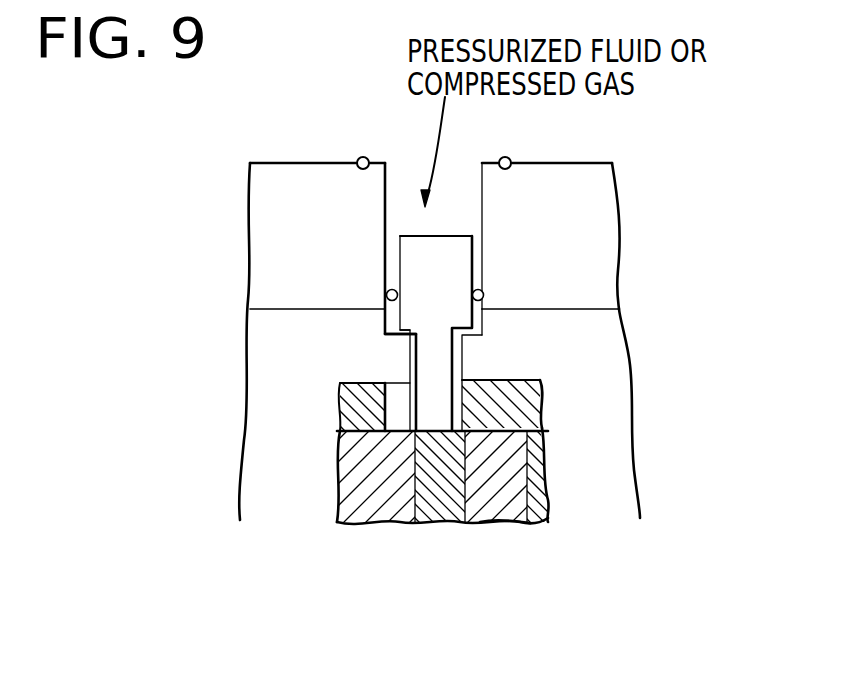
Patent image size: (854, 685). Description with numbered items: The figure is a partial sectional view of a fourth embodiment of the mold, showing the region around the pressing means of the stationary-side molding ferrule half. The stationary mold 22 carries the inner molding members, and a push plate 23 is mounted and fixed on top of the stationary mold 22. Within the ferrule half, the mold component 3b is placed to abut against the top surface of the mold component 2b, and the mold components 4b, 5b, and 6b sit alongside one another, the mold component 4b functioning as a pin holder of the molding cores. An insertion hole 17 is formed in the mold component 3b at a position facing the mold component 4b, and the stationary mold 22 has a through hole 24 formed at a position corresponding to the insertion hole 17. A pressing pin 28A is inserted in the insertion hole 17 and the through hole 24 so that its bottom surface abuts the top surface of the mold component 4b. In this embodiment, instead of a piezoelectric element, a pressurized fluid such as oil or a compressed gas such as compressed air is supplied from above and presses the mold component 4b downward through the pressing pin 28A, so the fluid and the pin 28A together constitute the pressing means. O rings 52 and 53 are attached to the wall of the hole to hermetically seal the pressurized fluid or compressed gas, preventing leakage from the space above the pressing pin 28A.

The O ring 53 is at (362, 157).
The O ring 52 is at (387, 294).
The pressing pin 28A is at (460, 254).
The push plate 23 is at (608, 238).
The stationary mold 22 is at (612, 333).
The through hole 24 is at (384, 329).
The insertion hole 17 is at (403, 403).
The mold component 3b is at (350, 412).
The mold component 2b is at (343, 490).
The mold component 4b is at (433, 508).
The mold component 5b is at (505, 508).
The mold component 6b is at (546, 486).